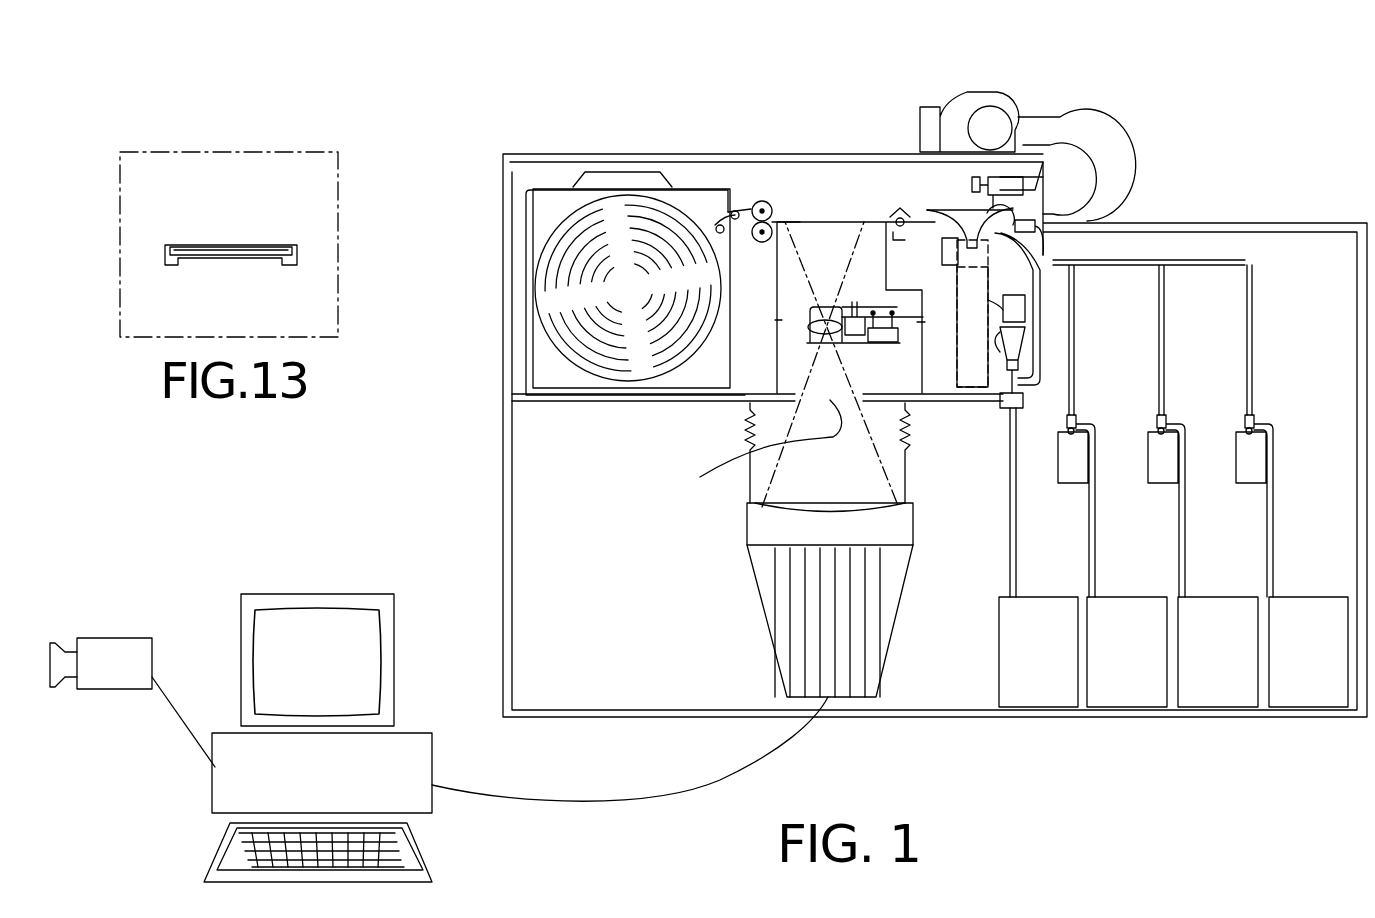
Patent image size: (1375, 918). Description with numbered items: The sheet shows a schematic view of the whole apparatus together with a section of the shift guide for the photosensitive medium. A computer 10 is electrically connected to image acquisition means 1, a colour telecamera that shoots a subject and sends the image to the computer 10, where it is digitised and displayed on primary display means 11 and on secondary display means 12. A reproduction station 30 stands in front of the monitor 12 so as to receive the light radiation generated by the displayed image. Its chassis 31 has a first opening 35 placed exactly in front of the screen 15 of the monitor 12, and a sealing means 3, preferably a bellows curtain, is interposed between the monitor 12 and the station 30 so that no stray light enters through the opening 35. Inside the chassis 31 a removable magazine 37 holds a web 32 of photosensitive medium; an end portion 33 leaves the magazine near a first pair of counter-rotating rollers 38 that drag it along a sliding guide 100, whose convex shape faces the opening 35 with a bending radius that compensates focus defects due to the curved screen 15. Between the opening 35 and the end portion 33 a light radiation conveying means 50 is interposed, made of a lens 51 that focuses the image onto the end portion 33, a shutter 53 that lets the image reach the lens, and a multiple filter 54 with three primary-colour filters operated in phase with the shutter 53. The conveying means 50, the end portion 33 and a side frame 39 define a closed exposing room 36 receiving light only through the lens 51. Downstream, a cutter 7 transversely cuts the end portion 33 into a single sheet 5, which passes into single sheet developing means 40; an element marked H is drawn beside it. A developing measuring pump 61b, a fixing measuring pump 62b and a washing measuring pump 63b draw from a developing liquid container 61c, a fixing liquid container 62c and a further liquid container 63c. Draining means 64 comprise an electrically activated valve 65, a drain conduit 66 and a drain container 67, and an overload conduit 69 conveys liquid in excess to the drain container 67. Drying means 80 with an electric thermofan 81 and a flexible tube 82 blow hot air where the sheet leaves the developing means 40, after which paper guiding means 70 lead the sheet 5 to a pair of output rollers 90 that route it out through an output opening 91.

In FIG. 1, the image acquisition means 1 is at (112, 678).
In FIG. 1, the sealing means 3 is at (907, 458).
In FIG. 1, the single sheet of photosensitive medium 5 is at (984, 201).
In FIG. 1, the cutter 7 is at (896, 216).
In FIG. 1, the computer 10 is at (175, 787).
In FIG. 1, the primary display means 11 is at (304, 612).
In FIG. 1, the secondary display means 12 is at (760, 628).
In FIG. 1, the screen 15 is at (800, 500).
In FIG. 1, the reproduction station 30 is at (770, 148).
In FIG. 1, the chassis 31 is at (682, 400).
In FIG. 1, the web of photosensitive medium 32 is at (622, 215).
In FIG. 13, the end portion 33 is at (258, 267).
In FIG. 1, the end portion 33 is at (786, 218).
In FIG. 1, the first opening 35 is at (700, 477).
In FIG. 1, the exposing room 36 is at (832, 236).
In FIG. 1, the removable magazine 37 is at (550, 205).
In FIG. 1, the first pair of counter-rotating rollers 38 is at (752, 205).
In FIG. 1, the side frame 39 is at (775, 252).
In FIG. 1, the single sheet developing means 40 is at (960, 321).
In FIG. 1, the light radiation conveying means 50 is at (797, 305).
In FIG. 1, the lens 51 is at (822, 325).
In FIG. 1, the shutter 53 is at (887, 335).
In FIG. 1, the multiple filter 54 is at (860, 302).
In FIG. 1, the developing measuring pump 61b is at (1068, 473).
In FIG. 1, the fixing measuring pump 62b is at (1160, 473).
In FIG. 1, the washing measuring pump 63b is at (1248, 473).
In FIG. 1, the developing liquid container 61c is at (1122, 700).
In FIG. 1, the fixing liquid container 62c is at (1215, 700).
In FIG. 1, the third reservoir 63c is at (1302, 700).
In FIG. 1, the draining means 64 is at (1027, 352).
In FIG. 1, the electrically activated valve 65 is at (1015, 335).
In FIG. 1, the drain conduit 66 is at (1010, 558).
In FIG. 1, the drain container 67 is at (1038, 700).
In FIG. 1, the overload conduit 69 is at (1032, 282).
In FIG. 1, the paper guiding means 70 is at (1027, 202).
In FIG. 1, the drying means 80 is at (960, 78).
In FIG. 1, the electric thermofan 81 is at (992, 106).
In FIG. 1, the flexible tube 82 is at (1090, 145).
In FIG. 1, the pair of output rollers 90 is at (1025, 190).
In FIG. 1, the output opening 91 is at (1037, 212).
In FIG. 13, the sliding guide 100 is at (232, 246).
In FIG. 1, the heater switch H is at (938, 257).